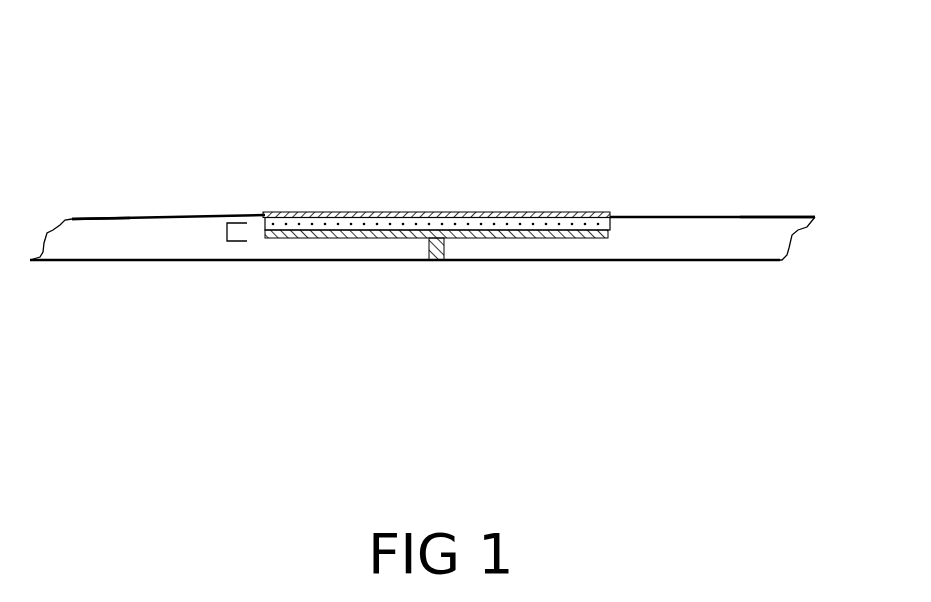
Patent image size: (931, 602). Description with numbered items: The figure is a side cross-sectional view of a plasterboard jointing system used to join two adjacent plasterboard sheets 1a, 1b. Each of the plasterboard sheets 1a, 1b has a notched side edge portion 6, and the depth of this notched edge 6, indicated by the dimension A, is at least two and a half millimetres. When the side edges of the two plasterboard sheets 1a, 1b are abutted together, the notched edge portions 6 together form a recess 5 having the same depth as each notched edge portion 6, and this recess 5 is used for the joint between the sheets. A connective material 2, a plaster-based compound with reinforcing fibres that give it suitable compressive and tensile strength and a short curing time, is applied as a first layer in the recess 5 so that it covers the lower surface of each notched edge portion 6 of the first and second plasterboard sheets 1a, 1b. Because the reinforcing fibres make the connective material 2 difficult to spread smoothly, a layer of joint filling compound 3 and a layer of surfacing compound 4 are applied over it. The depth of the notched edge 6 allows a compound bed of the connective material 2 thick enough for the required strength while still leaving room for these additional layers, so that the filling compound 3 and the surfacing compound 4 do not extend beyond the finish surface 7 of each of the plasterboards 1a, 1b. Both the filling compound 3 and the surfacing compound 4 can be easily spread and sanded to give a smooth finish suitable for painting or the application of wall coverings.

The plasterboard sheet 1a is at (66, 250).
The plasterboard sheet 1b is at (783, 243).
The connective material 2 is at (436, 260).
The filling compound 3 is at (383, 223).
The surfacing compound 4 is at (471, 214).
The recess 5 is at (560, 162).
The notched side edge portion 6 is at (324, 245).
The finish surface 7 is at (80, 219).
The depth of notched edge A is at (221, 181).